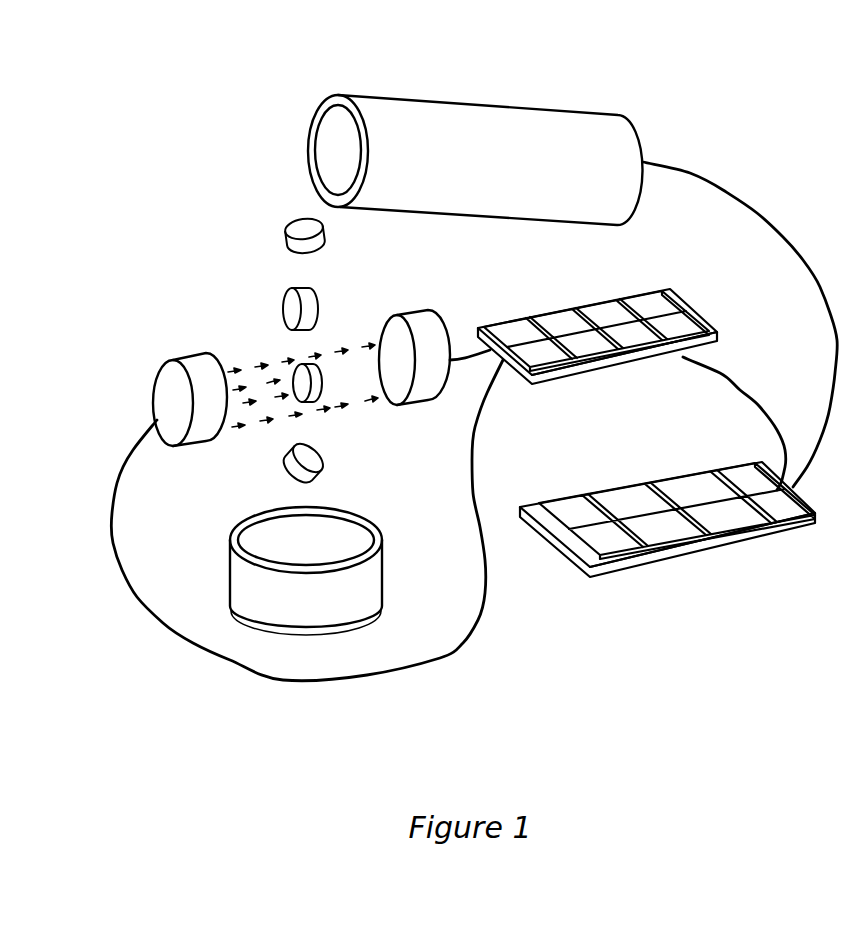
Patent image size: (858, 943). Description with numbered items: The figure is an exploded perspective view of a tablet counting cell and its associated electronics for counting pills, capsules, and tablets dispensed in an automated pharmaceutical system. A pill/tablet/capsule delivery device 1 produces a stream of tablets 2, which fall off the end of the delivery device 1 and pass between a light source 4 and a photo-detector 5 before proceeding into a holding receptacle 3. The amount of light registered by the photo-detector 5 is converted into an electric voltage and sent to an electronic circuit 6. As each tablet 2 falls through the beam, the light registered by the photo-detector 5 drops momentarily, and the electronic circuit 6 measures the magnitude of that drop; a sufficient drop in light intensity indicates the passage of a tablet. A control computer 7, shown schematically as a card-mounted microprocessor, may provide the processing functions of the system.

The pill/tablet/capsule delivery device 1 is at (453, 102).
The tablets 2 is at (285, 233).
The holding receptacle 3 is at (383, 565).
The light source 4 is at (163, 392).
The photo-detector 5 is at (430, 400).
The electronic circuit 6 is at (693, 307).
The control computer 7 is at (677, 562).